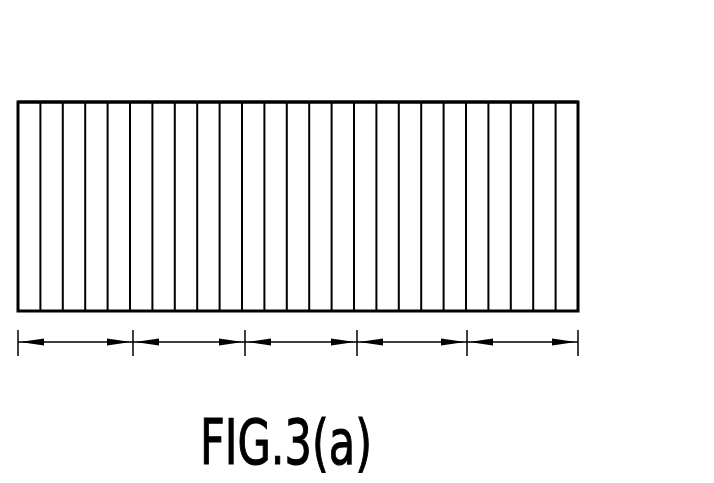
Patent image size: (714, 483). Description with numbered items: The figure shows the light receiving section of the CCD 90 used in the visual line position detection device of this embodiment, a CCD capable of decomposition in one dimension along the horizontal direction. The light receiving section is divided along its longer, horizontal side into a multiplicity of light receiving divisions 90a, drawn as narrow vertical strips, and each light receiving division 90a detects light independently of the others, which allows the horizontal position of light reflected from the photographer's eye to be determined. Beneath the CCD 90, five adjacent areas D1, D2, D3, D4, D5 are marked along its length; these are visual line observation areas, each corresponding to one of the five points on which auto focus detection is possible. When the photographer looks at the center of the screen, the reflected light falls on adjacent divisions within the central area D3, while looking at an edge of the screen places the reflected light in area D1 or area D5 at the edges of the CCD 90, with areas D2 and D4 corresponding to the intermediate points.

The CCD 90 is at (578, 163).
The light receiving division 90a is at (255, 102).
The area D1 is at (75, 361).
The area D2 is at (189, 361).
The area D3 is at (301, 361).
The area D4 is at (412, 361).
The area D5 is at (522, 361).